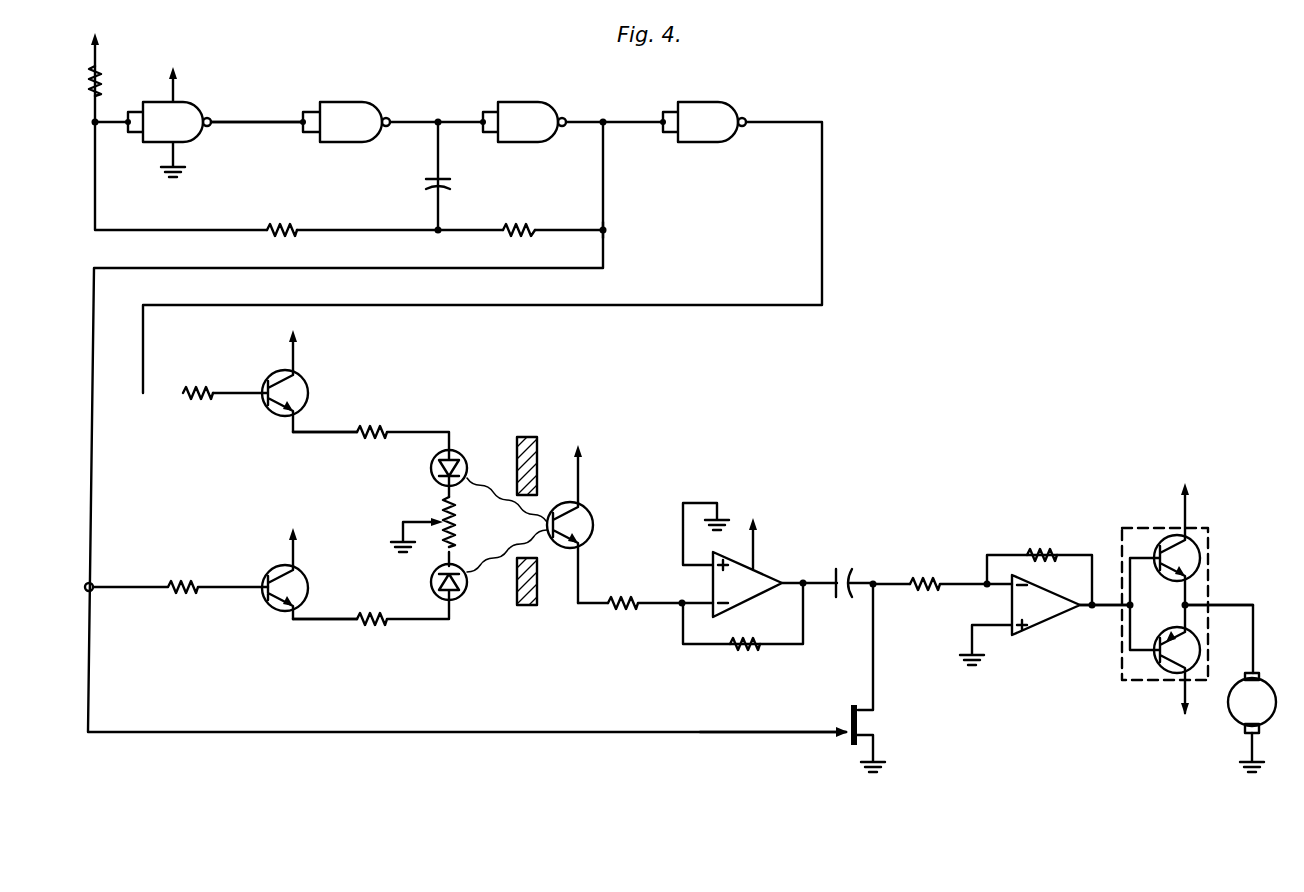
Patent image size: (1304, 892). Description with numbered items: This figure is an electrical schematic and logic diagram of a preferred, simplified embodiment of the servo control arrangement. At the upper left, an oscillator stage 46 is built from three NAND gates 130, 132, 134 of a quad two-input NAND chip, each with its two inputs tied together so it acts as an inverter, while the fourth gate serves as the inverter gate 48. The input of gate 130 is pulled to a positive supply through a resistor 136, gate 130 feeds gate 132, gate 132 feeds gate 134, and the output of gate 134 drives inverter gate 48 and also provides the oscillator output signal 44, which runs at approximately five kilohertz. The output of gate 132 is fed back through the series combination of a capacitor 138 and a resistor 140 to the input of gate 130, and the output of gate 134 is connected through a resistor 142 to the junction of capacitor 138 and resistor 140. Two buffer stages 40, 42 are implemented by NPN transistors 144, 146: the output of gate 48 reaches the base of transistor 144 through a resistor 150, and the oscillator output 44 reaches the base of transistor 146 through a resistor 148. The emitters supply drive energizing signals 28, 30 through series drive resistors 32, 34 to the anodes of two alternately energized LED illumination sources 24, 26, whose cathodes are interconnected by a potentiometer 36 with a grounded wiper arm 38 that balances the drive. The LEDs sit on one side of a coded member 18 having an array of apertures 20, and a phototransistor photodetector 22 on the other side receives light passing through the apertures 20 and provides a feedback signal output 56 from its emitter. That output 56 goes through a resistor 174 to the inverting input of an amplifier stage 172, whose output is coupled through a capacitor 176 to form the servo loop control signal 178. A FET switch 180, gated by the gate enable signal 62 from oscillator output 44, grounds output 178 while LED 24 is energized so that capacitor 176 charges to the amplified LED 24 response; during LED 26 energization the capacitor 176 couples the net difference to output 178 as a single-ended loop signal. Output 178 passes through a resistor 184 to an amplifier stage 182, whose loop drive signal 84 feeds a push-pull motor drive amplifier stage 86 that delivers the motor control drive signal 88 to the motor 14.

The resistor 136 is at (100, 68).
The oscillator stage 46 is at (326, 73).
The NAND gate 130 is at (202, 102).
The NAND gate 132 is at (367, 102).
The NAND gate 134 is at (534, 102).
The inverter gate 48 is at (708, 103).
The capacitor 138 is at (424, 177).
The resistor 140 is at (283, 228).
The resistor 142 is at (520, 228).
The oscillator output signal 44 is at (605, 230).
The resistor 150 is at (198, 400).
The NPN transistor 144 is at (267, 383).
The buffer stage 40 is at (318, 372).
The drive energizing signal 28 is at (319, 435).
The series drive resistor 32 is at (372, 428).
The resistor 148 is at (180, 583).
The NPN transistor 146 is at (266, 582).
The buffer stage 42 is at (298, 572).
The drive energizing signal 30 is at (310, 620).
The series drive resistor 34 is at (372, 620).
The illumination source 24 is at (462, 453).
The potentiometer 36 is at (456, 519).
The movable wiper arm 38 is at (412, 520).
The illumination source 26 is at (432, 587).
The coded member 18 is at (535, 444).
The apertures 20 is at (517, 555).
The photodetector device 22 is at (558, 503).
The feedback signal output 56 is at (588, 605).
The resistor 174 is at (620, 598).
The amplifier stage 172 is at (770, 574).
The capacitor 176 is at (840, 567).
The servo loop control signal 178 is at (878, 580).
The resistor 184 is at (928, 596).
The FET switch 180 is at (847, 715).
The gate enable signal 62 is at (742, 734).
The amplifier stage 182 is at (1055, 588).
The loop drive signal 84 is at (1115, 608).
The motor drive amplifier stage 86 is at (1145, 530).
The motor control drive signal 88 is at (1222, 605).
The motor 14 is at (1235, 722).